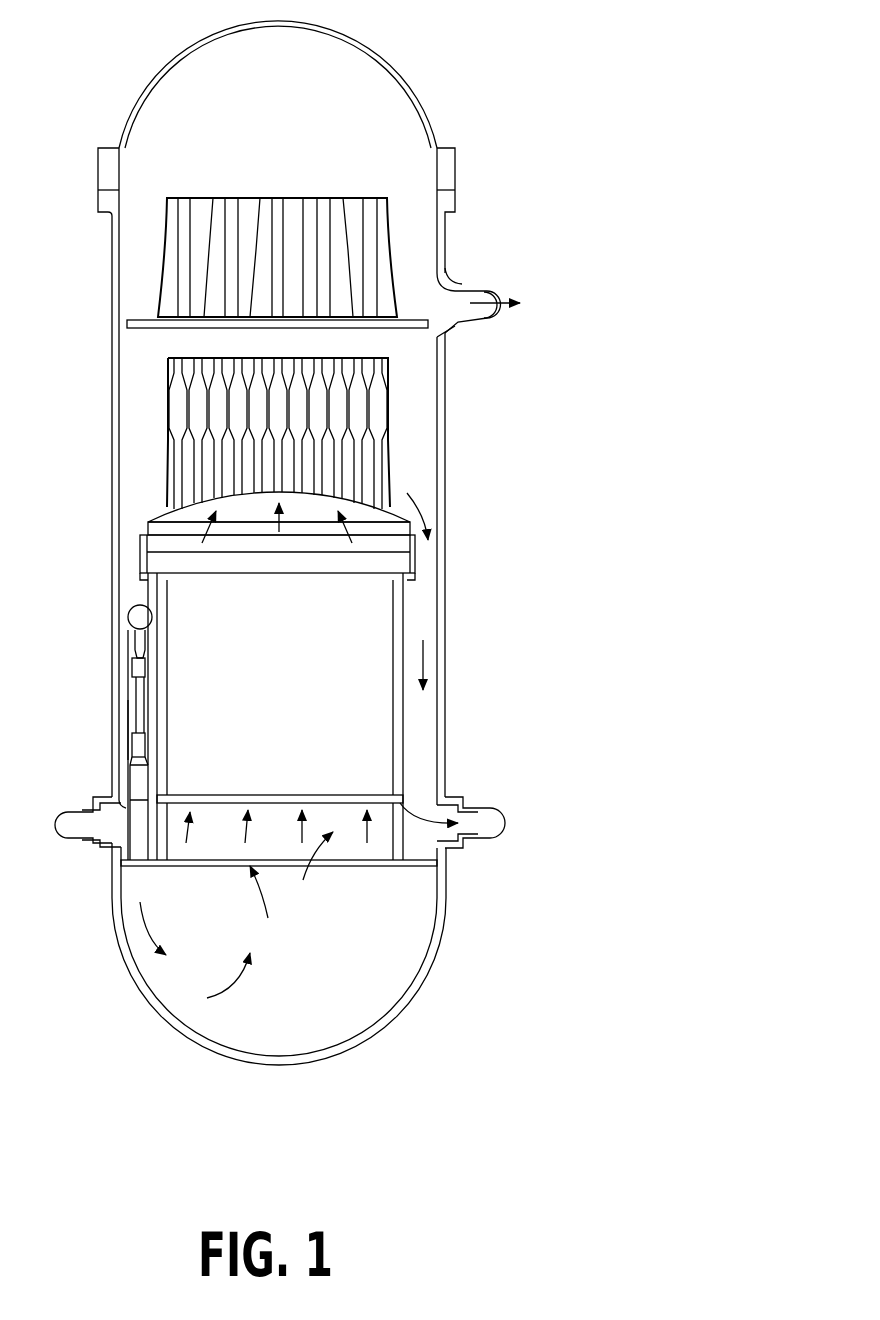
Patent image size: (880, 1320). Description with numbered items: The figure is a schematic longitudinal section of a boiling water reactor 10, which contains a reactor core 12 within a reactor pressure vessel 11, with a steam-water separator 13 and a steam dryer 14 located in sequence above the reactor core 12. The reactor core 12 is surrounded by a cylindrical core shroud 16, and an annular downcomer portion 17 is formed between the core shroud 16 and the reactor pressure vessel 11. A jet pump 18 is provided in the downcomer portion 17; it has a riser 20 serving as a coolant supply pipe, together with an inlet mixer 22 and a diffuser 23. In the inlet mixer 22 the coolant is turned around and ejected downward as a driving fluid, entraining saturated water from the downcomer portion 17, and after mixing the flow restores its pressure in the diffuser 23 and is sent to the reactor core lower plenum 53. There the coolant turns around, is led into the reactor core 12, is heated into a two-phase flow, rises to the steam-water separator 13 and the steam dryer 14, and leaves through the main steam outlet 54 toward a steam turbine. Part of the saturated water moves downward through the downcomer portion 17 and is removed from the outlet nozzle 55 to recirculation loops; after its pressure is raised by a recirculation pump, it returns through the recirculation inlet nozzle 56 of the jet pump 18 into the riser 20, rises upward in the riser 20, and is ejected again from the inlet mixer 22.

The boiling water reactor 10 is at (455, 113).
The reactor pressure vessel 11 is at (447, 255).
The reactor core 12 is at (377, 633).
The steam-water separator 13 is at (397, 379).
The steam dryer 14 is at (407, 250).
The core shroud 16 is at (410, 713).
The downcomer portion 17 is at (434, 774).
The jet pump 18 is at (128, 688).
The riser 20 is at (128, 725).
The inlet mixer 22 is at (148, 620).
The diffuser 23 is at (140, 782).
The reactor core lower plenum 53 is at (277, 1000).
The main steam outlet 54 is at (480, 321).
The outlet nozzle 55 is at (480, 805).
The recirculation inlet nozzle 56 is at (83, 833).